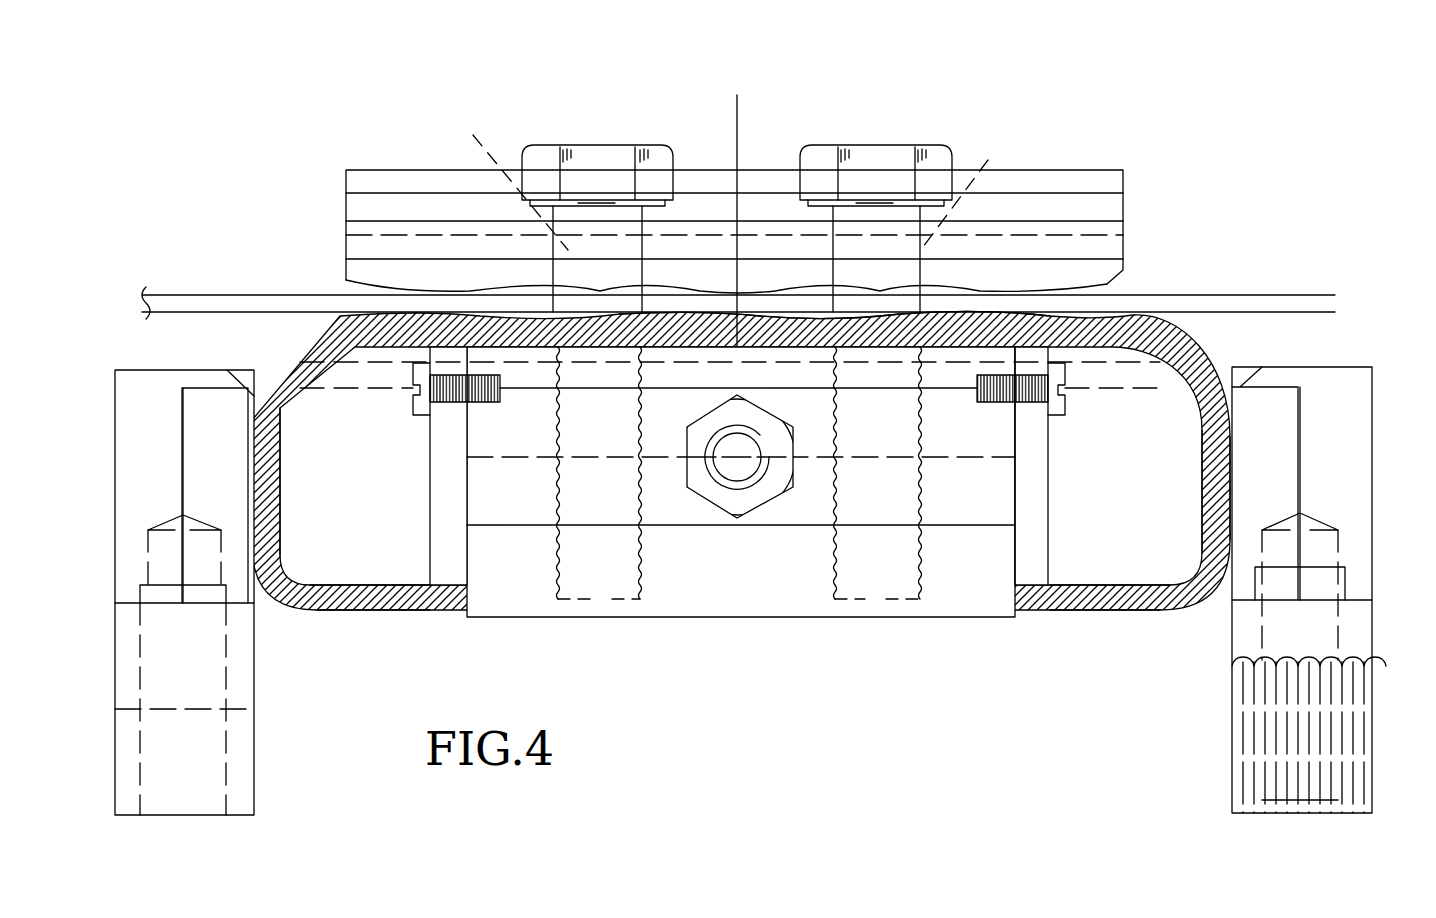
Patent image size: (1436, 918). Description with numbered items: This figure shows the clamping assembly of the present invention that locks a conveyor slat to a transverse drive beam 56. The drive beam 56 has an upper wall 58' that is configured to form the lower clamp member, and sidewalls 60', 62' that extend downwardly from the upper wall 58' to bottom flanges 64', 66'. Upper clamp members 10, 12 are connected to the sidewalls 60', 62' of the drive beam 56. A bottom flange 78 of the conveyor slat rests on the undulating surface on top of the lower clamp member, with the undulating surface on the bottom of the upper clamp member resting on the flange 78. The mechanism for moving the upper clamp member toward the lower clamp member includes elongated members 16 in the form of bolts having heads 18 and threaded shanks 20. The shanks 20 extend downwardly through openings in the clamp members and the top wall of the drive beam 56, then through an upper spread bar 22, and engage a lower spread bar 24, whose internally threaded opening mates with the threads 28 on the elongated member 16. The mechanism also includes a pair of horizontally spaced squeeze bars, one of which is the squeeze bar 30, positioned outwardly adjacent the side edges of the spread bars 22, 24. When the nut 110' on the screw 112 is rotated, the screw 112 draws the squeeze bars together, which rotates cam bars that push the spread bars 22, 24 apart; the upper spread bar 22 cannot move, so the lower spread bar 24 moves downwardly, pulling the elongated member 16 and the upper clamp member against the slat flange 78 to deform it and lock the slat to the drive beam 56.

The upper clamp member 10 is at (222, 670).
The upper clamp member 12 is at (1245, 627).
The elongated member 16 is at (732, 179).
The head 18 is at (603, 163).
The threaded shank 20 is at (601, 560).
The upper spread bar 22 is at (640, 395).
The lower spread bar 24 is at (720, 600).
The threads 28 is at (655, 566).
The squeeze bar 30 is at (963, 500).
The transverse drive beam 56 is at (1178, 330).
The upper wall 58' is at (707, 390).
The sidewall 60' is at (305, 481).
The sidewall 62' is at (1174, 491).
The bottom flange 64' is at (370, 560).
The bottom flange 66' is at (1110, 629).
The bottom flange 78 is at (1291, 296).
The nut 110' is at (747, 484).
The screw 112 is at (725, 470).